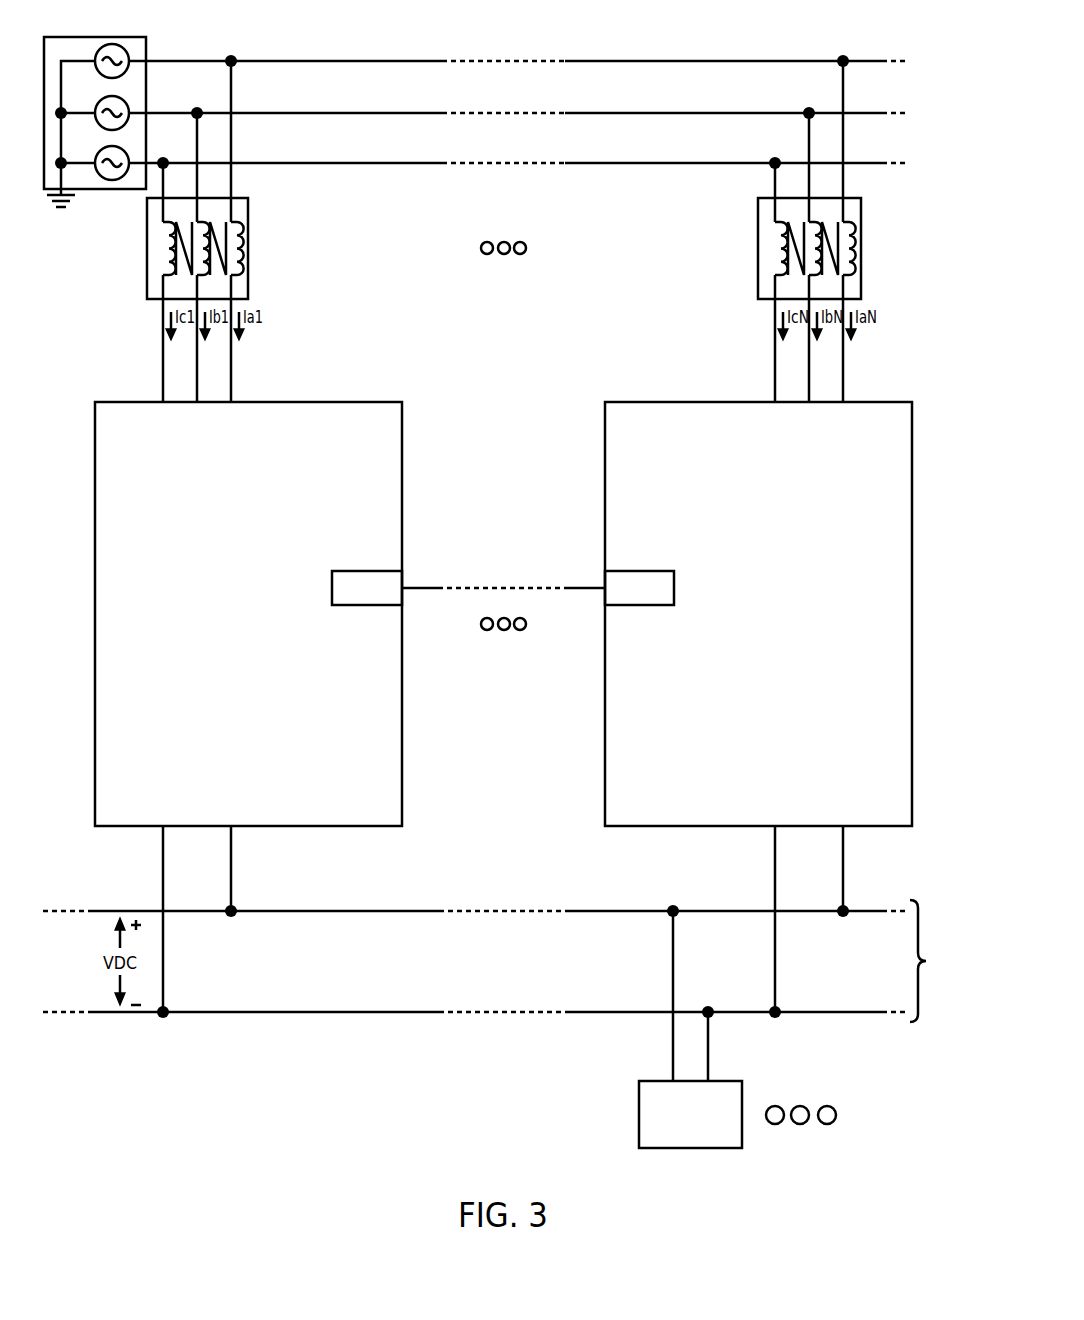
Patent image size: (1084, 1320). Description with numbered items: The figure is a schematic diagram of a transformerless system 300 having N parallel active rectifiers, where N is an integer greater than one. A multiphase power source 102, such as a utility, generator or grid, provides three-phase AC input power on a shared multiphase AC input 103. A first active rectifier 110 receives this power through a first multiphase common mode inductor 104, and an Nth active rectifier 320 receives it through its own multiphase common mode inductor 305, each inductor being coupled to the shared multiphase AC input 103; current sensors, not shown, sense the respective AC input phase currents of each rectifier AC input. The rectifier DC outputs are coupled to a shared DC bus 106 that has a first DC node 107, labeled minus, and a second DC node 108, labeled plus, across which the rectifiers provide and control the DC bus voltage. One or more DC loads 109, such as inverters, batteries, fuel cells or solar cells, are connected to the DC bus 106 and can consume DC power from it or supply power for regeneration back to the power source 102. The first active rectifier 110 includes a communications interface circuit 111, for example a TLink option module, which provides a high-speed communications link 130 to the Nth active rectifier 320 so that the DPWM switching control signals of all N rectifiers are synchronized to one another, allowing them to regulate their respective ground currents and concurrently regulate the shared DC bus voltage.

The transformerless system 300 is at (845, 44).
The multiphase power source 102 is at (89, 37).
The multiphase AC input 103 is at (910, 52).
The first multiphase common mode inductor 104 is at (147, 248).
The multiphase common mode inductor 305 is at (861, 248).
The first active rectifier 110 is at (365, 402).
The communications interface circuit 111 is at (378, 571).
The communications link 130 is at (415, 588).
The Nth active rectifier 320 is at (648, 402).
The second DC node 108 is at (119, 911).
The first DC node 107 is at (119, 1012).
The DC bus 106 is at (920, 961).
The DC load 109 is at (639, 1113).